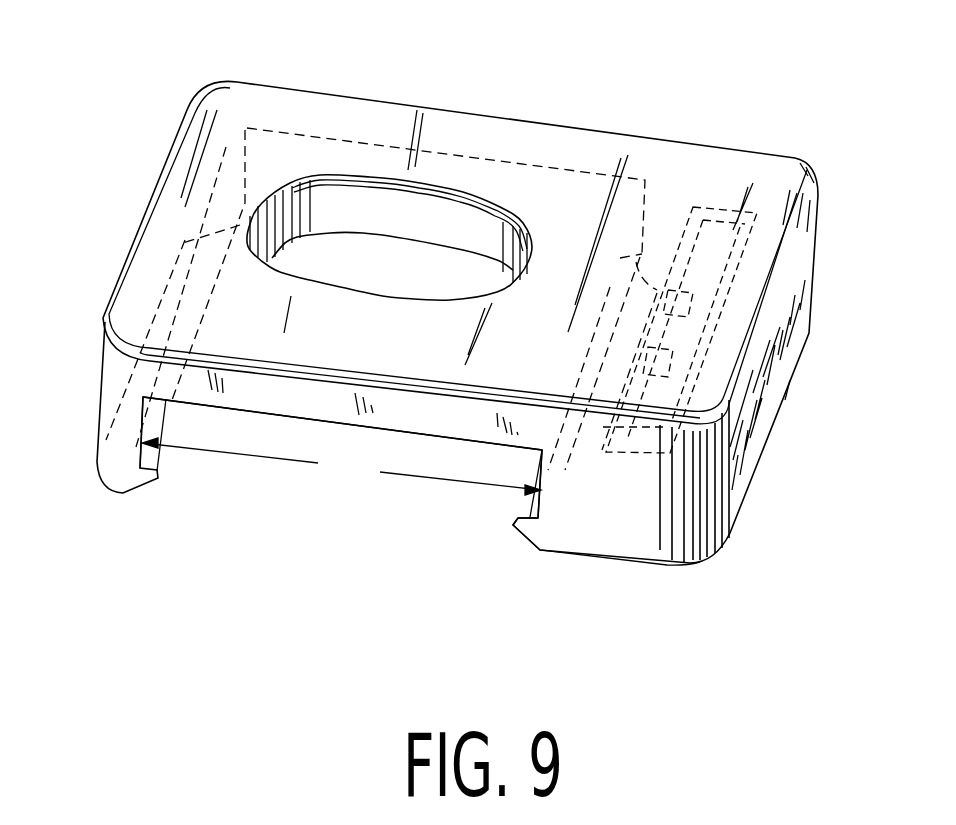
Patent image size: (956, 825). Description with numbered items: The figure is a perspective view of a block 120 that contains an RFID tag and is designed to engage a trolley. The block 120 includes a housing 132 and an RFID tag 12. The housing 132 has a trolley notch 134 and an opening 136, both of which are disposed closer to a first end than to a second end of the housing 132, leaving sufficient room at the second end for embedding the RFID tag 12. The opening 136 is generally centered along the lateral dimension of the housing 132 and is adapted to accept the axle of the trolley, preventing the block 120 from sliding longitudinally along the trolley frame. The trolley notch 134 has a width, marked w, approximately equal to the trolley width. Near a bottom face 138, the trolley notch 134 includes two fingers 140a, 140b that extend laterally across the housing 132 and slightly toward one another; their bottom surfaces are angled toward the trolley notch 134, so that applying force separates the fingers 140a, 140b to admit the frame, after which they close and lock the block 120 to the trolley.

The block 120 is at (675, 60).
The housing 132 is at (298, 90).
The opening 136 is at (383, 258).
The RFID tag 12 is at (712, 210).
The trolley notch 134 is at (150, 413).
The finger 140a is at (157, 418).
The finger 140b is at (530, 510).
The bottom face 138 is at (546, 549).